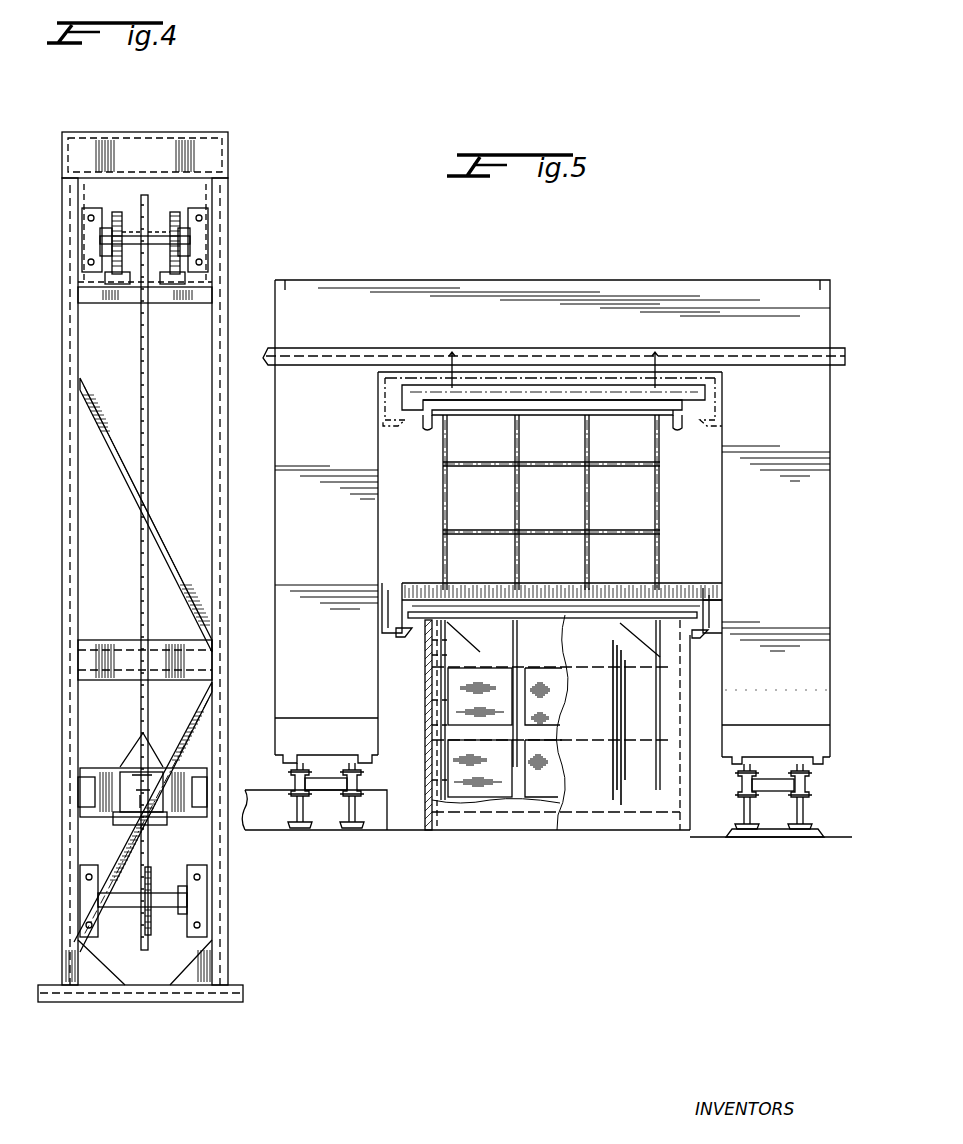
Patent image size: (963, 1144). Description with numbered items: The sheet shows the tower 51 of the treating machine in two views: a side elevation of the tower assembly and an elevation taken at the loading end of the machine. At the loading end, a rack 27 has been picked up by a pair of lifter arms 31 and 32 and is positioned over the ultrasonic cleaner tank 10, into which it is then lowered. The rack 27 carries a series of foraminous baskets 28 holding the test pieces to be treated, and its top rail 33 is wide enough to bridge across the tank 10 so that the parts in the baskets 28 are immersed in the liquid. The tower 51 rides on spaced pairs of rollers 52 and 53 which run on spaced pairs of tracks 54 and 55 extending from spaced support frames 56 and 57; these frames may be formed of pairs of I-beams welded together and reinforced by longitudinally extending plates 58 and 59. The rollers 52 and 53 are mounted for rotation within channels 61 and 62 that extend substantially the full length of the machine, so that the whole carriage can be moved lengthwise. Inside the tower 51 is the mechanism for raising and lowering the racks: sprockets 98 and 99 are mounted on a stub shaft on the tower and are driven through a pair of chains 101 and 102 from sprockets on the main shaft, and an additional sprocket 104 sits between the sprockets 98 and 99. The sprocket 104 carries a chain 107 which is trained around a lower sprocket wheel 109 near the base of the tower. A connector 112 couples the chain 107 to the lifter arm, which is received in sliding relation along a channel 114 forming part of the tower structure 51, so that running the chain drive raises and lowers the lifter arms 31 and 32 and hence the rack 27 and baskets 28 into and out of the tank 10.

In FIG. 4, the tower 51 is at (57, 471).
In FIG. 5, the tower 51 is at (742, 276).
In FIG. 4, the chain 101 is at (114, 210).
In FIG. 4, the sprocket 98 is at (123, 222).
In FIG. 4, the sprocket 104 is at (150, 210).
In FIG. 4, the sprocket 99 is at (192, 184).
In FIG. 4, the chain 102 is at (176, 212).
In FIG. 4, the chain 107 is at (149, 353).
In FIG. 4, the channel 114 is at (72, 412).
In FIG. 4, the connector 112 is at (103, 766).
In FIG. 4, the lower sprocket wheel 109 is at (147, 950).
In FIG. 5, the channel 61 is at (280, 722).
In FIG. 5, the lifter arm 31 is at (397, 418).
In FIG. 5, the lifter arm 32 is at (704, 426).
In FIG. 5, the top rail 33 is at (604, 614).
In FIG. 5, the ultrasonic cleaner tank 10 is at (423, 729).
In FIG. 5, the rack 27 is at (443, 692).
In FIG. 5, the foraminous baskets 28 is at (505, 732).
In FIG. 5, the rollers 52 is at (352, 765).
In FIG. 5, the tracks 54 is at (289, 768).
In FIG. 5, the plate 58 is at (328, 791).
In FIG. 5, the support frame 56 is at (311, 834).
In FIG. 5, the channel 62 is at (806, 738).
In FIG. 5, the rollers 53 is at (800, 765).
In FIG. 5, the tracks 55 is at (737, 772).
In FIG. 5, the plate 59 is at (770, 792).
In FIG. 5, the support frame 57 is at (790, 842).